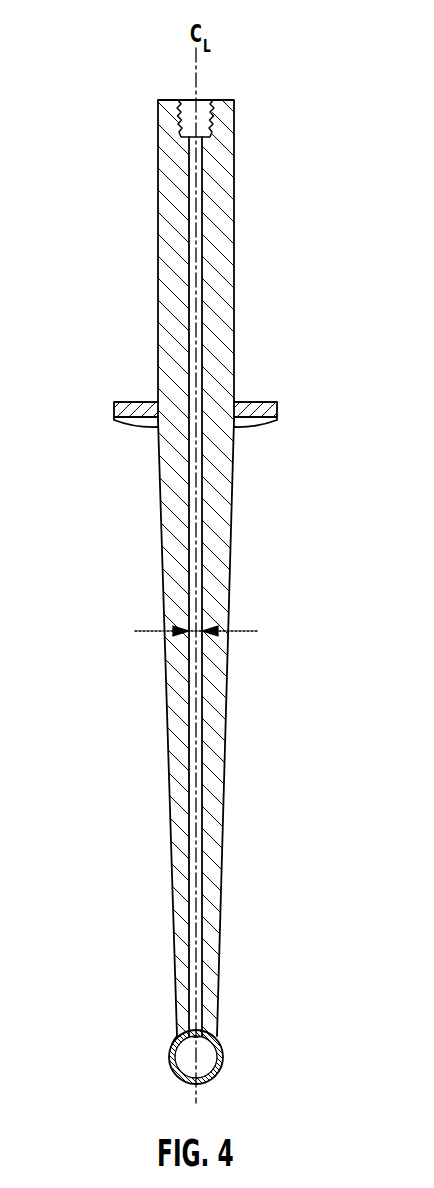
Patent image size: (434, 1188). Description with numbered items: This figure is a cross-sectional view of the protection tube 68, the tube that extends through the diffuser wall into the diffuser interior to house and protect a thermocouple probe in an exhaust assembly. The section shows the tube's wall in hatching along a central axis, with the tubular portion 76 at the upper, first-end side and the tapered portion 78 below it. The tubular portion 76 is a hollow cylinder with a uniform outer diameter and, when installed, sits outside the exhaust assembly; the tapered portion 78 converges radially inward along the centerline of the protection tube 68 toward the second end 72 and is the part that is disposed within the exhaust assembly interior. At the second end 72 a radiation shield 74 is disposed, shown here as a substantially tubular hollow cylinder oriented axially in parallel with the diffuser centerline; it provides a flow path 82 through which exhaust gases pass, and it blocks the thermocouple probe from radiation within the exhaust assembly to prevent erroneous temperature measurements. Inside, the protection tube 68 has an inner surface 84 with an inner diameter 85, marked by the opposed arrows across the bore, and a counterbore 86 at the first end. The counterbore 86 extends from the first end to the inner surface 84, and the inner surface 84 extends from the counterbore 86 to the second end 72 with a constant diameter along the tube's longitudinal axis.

The protection tube 68 is at (166, 566).
The second end 72 is at (178, 1040).
The radiation shield 74 is at (172, 1058).
The tubular portion 76 is at (157, 286).
The tapered portion 78 is at (168, 737).
The flow path 82 is at (197, 1056).
The inner surface 84 is at (192, 763).
The inner diameter 85 is at (233, 631).
The counterbore 86 is at (188, 100).